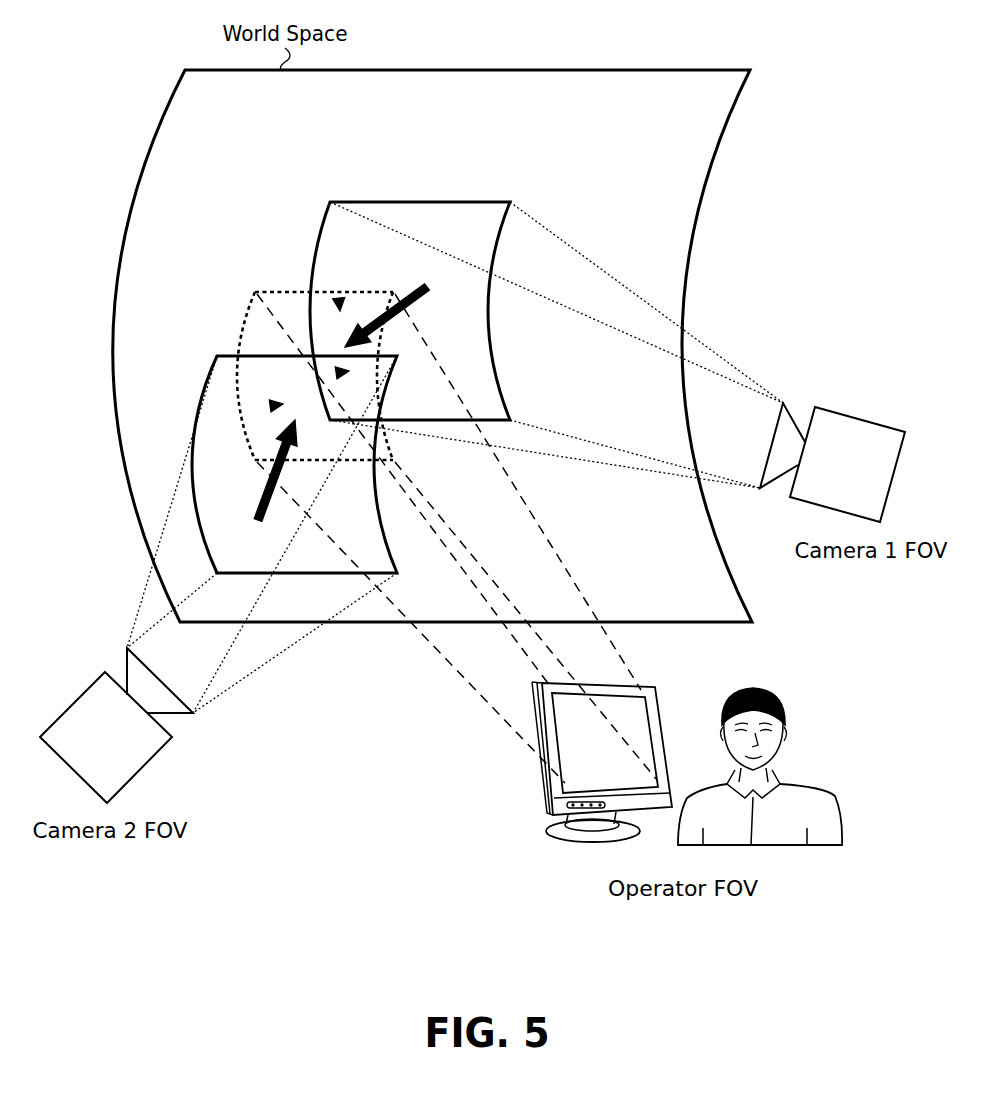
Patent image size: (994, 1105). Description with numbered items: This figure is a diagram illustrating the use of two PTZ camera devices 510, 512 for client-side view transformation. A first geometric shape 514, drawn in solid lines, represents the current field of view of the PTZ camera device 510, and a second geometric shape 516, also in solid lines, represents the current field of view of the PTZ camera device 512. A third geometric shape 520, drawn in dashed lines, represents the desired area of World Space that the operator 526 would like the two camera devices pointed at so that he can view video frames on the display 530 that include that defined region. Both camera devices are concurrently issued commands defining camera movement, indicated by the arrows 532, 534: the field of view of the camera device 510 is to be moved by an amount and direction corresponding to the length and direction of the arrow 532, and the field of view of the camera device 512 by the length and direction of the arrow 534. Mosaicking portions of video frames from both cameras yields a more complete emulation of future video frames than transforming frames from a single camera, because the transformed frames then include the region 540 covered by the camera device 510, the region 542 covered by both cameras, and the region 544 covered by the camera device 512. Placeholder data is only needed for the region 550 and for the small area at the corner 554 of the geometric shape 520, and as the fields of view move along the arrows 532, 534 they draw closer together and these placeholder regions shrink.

The PTZ camera device 510 is at (877, 420).
The PTZ camera device 512 is at (62, 712).
The first geometric shape 514 is at (419, 203).
The second geometric shape 516 is at (305, 575).
The third geometric shape 520 is at (248, 322).
The operator 526 is at (822, 792).
The display 530 is at (545, 800).
The arrow 532 is at (430, 292).
The arrow 534 is at (256, 516).
The region 540 is at (340, 298).
The region 542 is at (340, 372).
The region 544 is at (274, 405).
The region 550 is at (288, 298).
The corner 554 is at (389, 452).